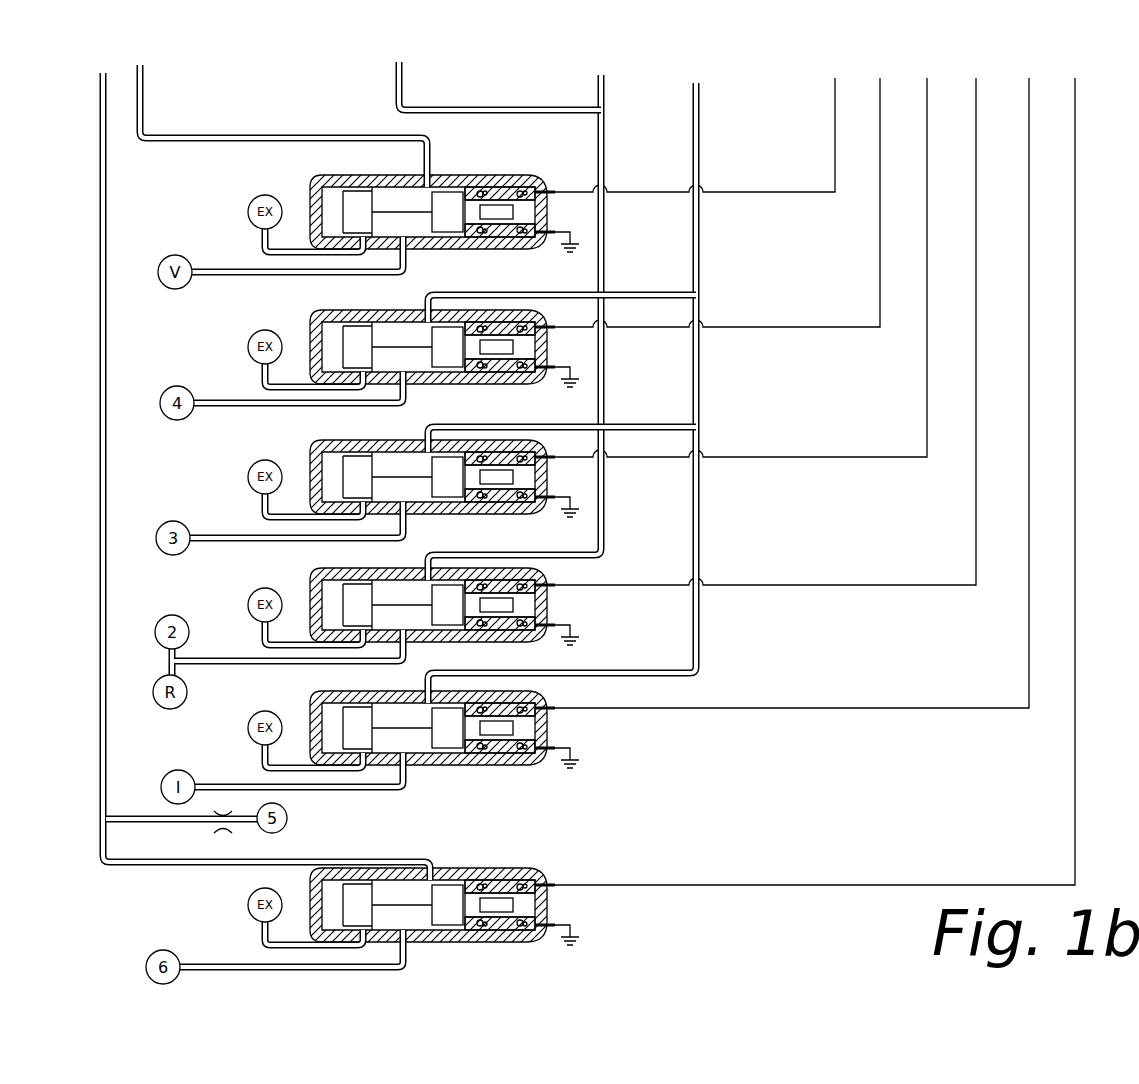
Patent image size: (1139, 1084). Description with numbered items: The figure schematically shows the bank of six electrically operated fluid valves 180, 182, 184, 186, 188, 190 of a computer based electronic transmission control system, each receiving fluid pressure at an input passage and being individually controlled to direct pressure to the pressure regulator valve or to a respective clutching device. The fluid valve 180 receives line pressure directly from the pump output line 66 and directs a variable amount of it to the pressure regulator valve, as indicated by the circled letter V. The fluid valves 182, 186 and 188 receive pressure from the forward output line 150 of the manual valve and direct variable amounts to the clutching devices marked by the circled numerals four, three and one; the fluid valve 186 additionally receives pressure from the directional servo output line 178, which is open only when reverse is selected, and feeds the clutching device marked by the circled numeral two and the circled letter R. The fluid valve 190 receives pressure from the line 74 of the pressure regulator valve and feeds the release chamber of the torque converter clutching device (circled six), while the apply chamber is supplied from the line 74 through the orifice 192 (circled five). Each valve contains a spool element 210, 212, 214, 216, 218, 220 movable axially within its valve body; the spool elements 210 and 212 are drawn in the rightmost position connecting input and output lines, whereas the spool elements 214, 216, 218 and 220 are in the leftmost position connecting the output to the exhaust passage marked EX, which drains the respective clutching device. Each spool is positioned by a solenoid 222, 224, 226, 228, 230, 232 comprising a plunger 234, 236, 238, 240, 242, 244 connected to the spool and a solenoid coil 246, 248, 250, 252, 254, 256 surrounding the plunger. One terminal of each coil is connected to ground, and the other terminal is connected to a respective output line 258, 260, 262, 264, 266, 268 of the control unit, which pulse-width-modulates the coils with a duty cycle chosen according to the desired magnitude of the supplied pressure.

The pump output line 66 is at (143, 100).
The line 74 is at (100, 325).
The forward output line 150 is at (403, 86).
The directional servo output line 178 is at (605, 98).
The electrically operated fluid valve 180 is at (312, 188).
The electrically operated fluid valve 182 is at (312, 325).
The electrically operated fluid valve 184 is at (312, 458).
The electrically operated fluid valve 186 is at (312, 587).
The electrically operated fluid valve 188 is at (312, 700).
The electrically operated fluid valve 190 is at (323, 868).
The orifice 192 is at (222, 831).
The spool element 210 is at (444, 190).
The spool element 212 is at (447, 372).
The spool element 214 is at (423, 506).
The spool element 216 is at (424, 635).
The spool element 218 is at (437, 765).
The spool element 220 is at (434, 928).
The solenoid 222 is at (547, 212).
The solenoid 224 is at (549, 347).
The solenoid 226 is at (549, 477).
The solenoid 228 is at (549, 605).
The solenoid 230 is at (549, 728).
The solenoid 232 is at (549, 905).
The plunger 234 is at (494, 219).
The plunger 236 is at (498, 341).
The plunger 238 is at (485, 478).
The plunger 240 is at (481, 601).
The plunger 242 is at (479, 722).
The plunger 244 is at (486, 899).
The solenoid coil 246 is at (516, 193).
The solenoid coil 248 is at (524, 367).
The solenoid coil 250 is at (523, 498).
The solenoid coil 252 is at (526, 626).
The solenoid coil 254 is at (508, 749).
The solenoid coil 256 is at (530, 884).
The output line 258 is at (797, 193).
The output line 260 is at (800, 328).
The output line 262 is at (855, 457).
The output line 264 is at (820, 585).
The output line 266 is at (853, 708).
The output line 268 is at (832, 885).